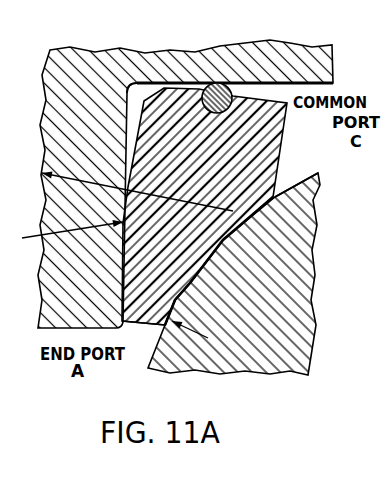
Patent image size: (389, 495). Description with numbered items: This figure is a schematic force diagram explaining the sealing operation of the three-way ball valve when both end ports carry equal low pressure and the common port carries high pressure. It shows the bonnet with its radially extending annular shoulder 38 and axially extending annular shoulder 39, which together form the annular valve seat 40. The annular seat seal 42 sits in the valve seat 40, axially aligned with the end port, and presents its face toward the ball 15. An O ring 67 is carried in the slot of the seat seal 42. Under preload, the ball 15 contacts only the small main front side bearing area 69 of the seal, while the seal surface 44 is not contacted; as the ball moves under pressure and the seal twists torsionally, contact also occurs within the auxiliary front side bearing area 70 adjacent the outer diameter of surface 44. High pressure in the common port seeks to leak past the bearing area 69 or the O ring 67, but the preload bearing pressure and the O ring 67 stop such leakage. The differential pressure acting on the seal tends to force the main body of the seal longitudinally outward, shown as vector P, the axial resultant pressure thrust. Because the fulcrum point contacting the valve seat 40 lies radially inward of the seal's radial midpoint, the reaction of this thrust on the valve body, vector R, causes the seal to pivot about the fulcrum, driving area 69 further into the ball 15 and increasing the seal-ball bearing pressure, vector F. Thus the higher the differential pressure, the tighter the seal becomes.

The ball 15 is at (303, 355).
The radially extending annular shoulder 38 is at (124, 122).
The axially extending annular shoulder 39 is at (148, 82).
The annular valve seat 40 is at (121, 82).
The seat seal 42 is at (284, 133).
The seat seal surface 44 is at (229, 238).
The O ring seal 67 is at (203, 83).
The main front side bearing area 69 is at (166, 314).
The auxiliary front side bearing area 70 is at (259, 207).
The axial resultant pressure thrust vector P is at (87, 180).
The reaction force vector R is at (58, 233).
The seal-ball bearing reaction force vector F is at (205, 336).